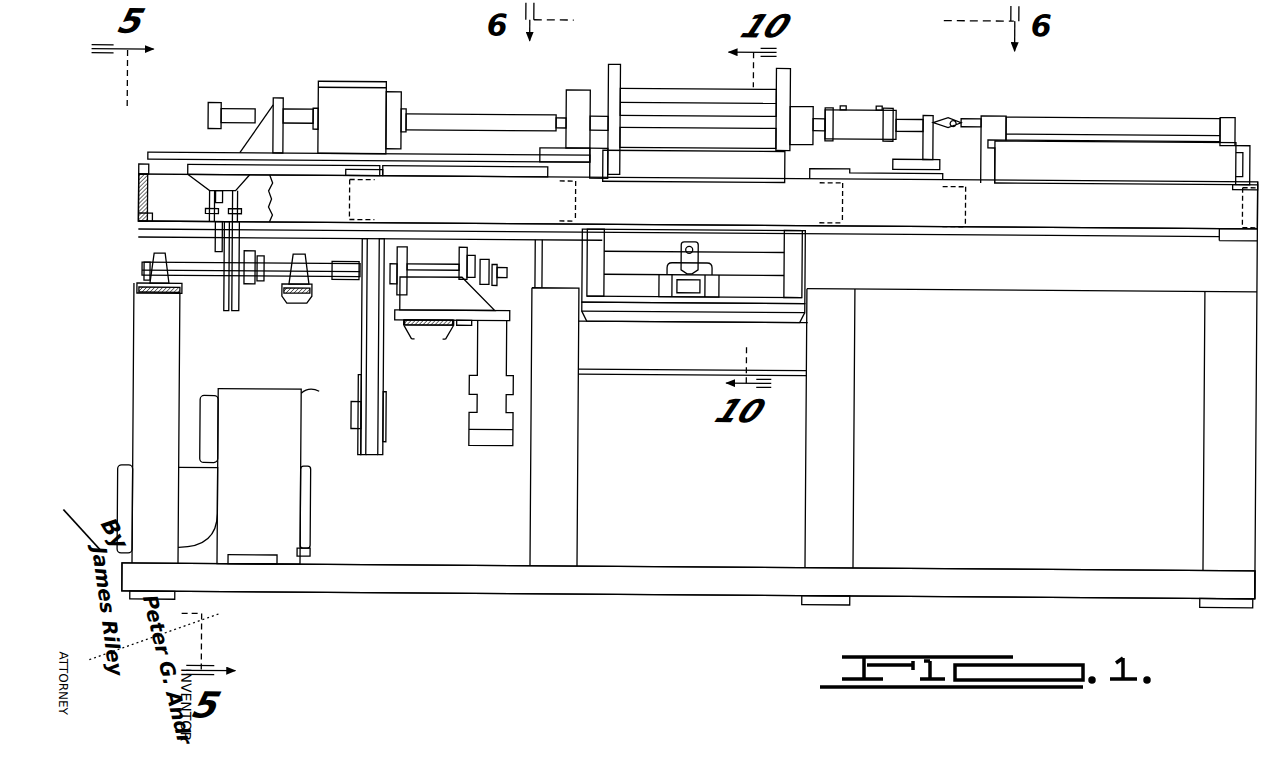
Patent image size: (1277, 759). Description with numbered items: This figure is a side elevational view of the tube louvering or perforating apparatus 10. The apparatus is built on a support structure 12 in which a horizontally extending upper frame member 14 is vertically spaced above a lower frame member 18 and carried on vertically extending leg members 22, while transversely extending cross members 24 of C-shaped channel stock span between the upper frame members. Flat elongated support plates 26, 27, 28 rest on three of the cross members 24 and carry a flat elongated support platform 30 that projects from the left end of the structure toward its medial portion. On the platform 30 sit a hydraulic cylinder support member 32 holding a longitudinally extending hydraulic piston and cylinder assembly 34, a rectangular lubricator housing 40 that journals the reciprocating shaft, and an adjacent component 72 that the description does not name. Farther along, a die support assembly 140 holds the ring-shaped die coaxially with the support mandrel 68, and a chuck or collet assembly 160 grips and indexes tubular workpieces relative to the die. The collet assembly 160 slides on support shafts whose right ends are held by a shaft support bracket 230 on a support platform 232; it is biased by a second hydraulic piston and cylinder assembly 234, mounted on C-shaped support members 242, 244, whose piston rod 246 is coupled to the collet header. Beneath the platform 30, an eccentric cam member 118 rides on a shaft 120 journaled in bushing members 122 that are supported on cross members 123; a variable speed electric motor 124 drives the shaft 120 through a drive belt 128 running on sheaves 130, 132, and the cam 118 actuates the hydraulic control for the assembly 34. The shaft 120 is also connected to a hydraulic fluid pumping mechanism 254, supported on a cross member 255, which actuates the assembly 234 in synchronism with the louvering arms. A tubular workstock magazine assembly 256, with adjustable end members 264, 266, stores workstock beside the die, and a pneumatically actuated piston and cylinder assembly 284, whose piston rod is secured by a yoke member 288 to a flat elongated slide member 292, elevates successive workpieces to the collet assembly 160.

The tube louvering or perforating apparatus 10 is at (454, 61).
The support structure 12 is at (461, 602).
The upper frame member 14 is at (260, 166).
The lower frame member 18 is at (971, 558).
The leg members 22 is at (130, 398).
The cross members 24 is at (134, 200).
The support plate 26 is at (141, 165).
The support plate 27 is at (340, 171).
The support plate 28 is at (538, 171).
The support platform 30 is at (164, 151).
The hydraulic cylinder support member 32 is at (282, 95).
The hydraulic piston and cylinder assembly 34 is at (243, 80).
The lubricator housing 40 is at (339, 76).
The support mandrel 68 is at (471, 109).
The coupling 72 is at (394, 91).
The eccentric cam member 118 is at (228, 314).
The shaft member 120 is at (198, 287).
The bushing members 122 is at (148, 249).
The cross members 123 is at (158, 295).
The variable speed electric motor 124 is at (315, 465).
The drive belt 128 is at (356, 336).
The sheave 130 is at (385, 462).
The sheave 132 is at (354, 298).
The die support assembly 140 is at (578, 85).
The chuck or collet assembly 160 is at (861, 102).
The shaft support bracket 230 is at (937, 143).
The support platform 232 is at (856, 160).
The hydraulic piston and cylinder assembly 234 is at (1127, 110).
The C-shaped support member 242 is at (993, 156).
The C-shaped support member 244 is at (1238, 156).
The piston rod 246 is at (970, 110).
The hydraulic fluid pumping mechanism 254 is at (468, 323).
The cross member 255 is at (434, 327).
The tubular workstock magazine assembly 256 is at (660, 82).
The end member 264 is at (620, 63).
The end member 266 is at (791, 68).
The pneumatically actuated piston and cylinder assembly 284 is at (678, 299).
The yoke member 288 is at (700, 240).
The slide member 292 is at (644, 250).